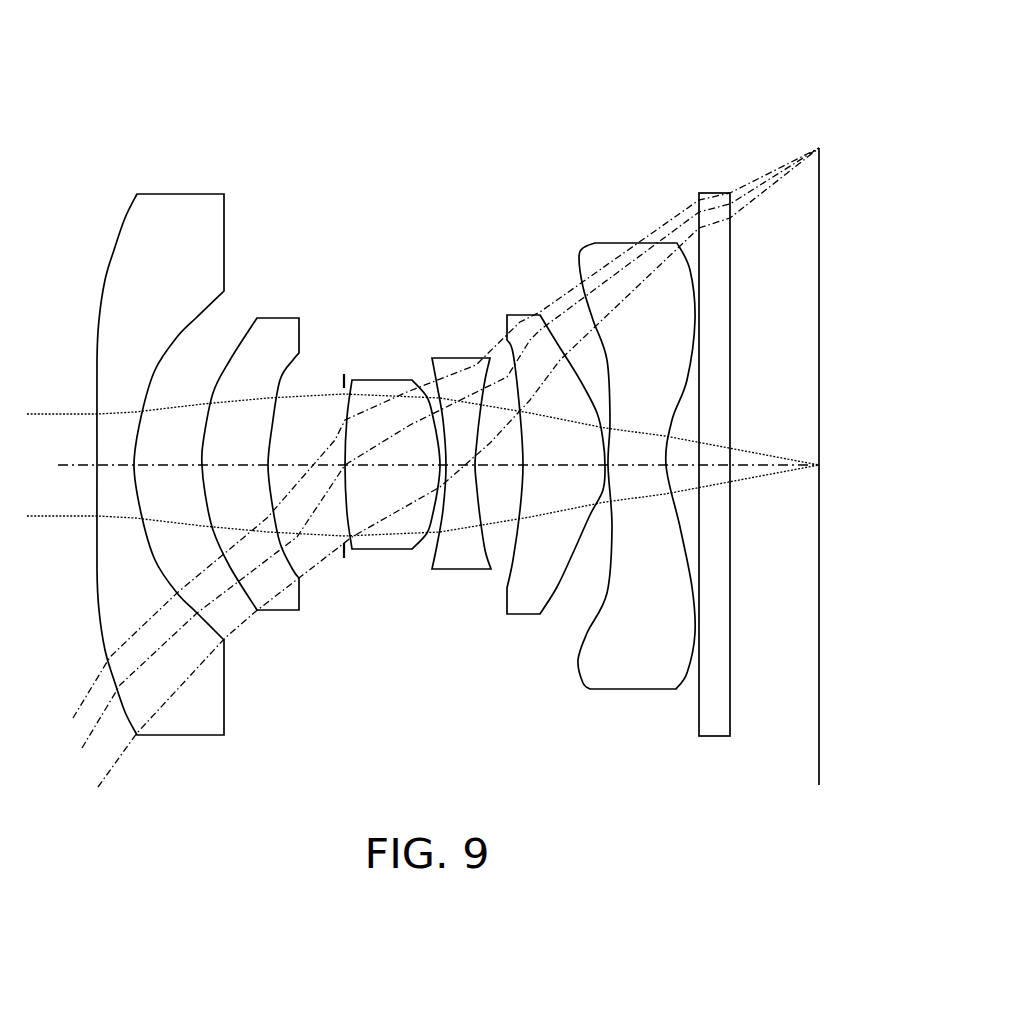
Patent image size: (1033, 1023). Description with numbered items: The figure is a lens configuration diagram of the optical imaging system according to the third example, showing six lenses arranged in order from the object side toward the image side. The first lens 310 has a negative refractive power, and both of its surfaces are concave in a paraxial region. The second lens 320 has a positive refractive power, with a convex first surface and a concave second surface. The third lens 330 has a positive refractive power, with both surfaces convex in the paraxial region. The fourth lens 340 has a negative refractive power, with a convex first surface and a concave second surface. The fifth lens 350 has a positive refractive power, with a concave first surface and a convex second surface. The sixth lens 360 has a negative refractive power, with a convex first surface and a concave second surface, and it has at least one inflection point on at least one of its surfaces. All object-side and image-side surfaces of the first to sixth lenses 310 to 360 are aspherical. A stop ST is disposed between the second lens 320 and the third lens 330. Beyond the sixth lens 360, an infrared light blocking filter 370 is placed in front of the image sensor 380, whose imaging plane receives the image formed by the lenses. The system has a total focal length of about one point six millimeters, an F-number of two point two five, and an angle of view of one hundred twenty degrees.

The first lens 310 is at (178, 196).
The second lens 320 is at (280, 320).
The third lens 330 is at (373, 383).
The fourth lens 340 is at (445, 358).
The fifth lens 350 is at (509, 314).
The sixth lens 360 is at (600, 243).
The infrared light blocking filter 370 is at (700, 193).
The image sensor 380 is at (820, 148).
The stop ST is at (344, 557).